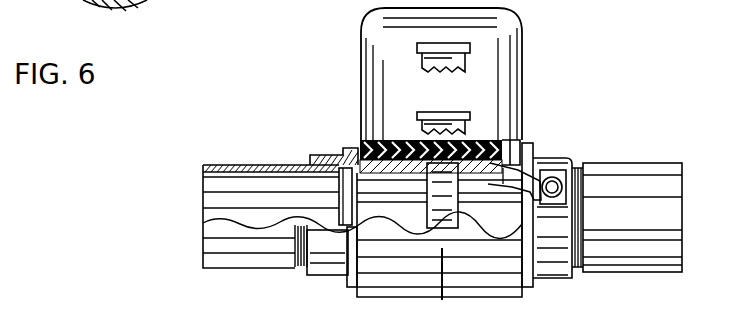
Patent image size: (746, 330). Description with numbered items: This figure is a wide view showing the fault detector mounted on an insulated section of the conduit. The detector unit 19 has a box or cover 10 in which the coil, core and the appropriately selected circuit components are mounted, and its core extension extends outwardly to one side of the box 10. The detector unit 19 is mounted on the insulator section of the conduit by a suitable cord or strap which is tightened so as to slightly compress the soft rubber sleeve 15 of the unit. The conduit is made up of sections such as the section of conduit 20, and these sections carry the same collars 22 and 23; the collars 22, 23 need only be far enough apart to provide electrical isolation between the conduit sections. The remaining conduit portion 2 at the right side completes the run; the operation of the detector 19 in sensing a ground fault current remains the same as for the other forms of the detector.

The pipe 2 is at (625, 270).
The box 10 is at (521, 52).
The soft rubber sleeve 15 is at (492, 292).
The detector unit 19 is at (324, 62).
The section of conduit 20 is at (262, 270).
The collar 22 is at (343, 158).
The collar 23 is at (553, 158).